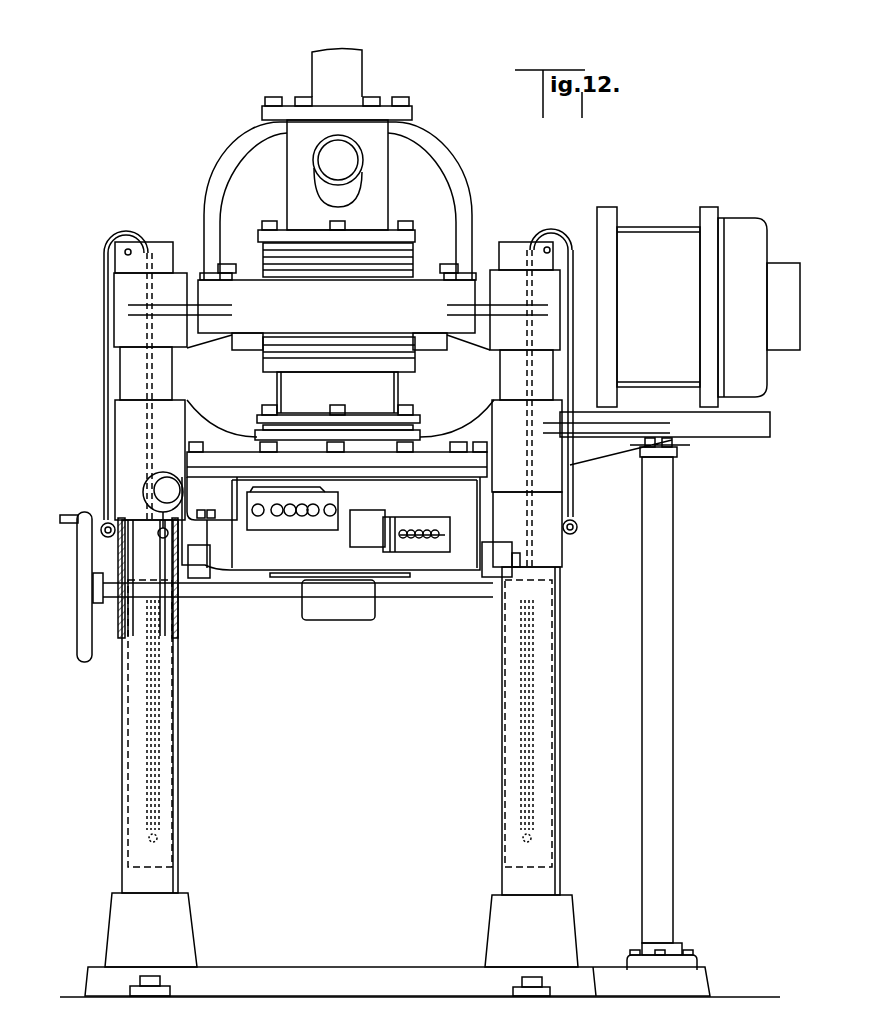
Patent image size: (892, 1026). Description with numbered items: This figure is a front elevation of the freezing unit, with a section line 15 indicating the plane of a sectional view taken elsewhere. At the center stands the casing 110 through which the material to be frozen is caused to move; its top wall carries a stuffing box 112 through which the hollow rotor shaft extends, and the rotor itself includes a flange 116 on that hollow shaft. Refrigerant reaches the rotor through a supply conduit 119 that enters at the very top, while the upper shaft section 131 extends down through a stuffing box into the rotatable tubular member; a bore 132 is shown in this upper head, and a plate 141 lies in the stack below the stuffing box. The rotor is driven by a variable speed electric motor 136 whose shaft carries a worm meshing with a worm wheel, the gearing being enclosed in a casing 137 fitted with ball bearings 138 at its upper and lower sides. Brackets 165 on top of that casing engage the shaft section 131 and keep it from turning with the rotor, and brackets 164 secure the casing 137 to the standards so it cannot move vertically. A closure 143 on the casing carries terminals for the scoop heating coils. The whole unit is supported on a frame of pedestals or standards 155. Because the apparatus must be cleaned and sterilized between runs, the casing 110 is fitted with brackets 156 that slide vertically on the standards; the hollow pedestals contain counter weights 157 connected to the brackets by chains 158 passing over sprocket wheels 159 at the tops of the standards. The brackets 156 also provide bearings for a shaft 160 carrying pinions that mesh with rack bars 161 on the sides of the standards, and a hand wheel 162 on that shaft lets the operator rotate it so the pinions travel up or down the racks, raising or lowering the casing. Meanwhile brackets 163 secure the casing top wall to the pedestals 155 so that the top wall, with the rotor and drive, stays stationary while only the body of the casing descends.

The section line 15 is at (313, 32).
The casing 110 is at (232, 560).
The stuffing box 112 is at (370, 418).
The flange 116 is at (152, 477).
The supply conduit 119 is at (362, 65).
The upper shaft section 131 is at (376, 192).
The bore 132 is at (313, 166).
The variable speed electric motor 136 is at (645, 233).
The casing 137 is at (247, 310).
The ball bearings 138 is at (375, 268).
The plate 141 is at (428, 437).
The closure 143 is at (332, 497).
The pedestals or standards 155 is at (175, 792).
The brackets 156 is at (198, 563).
The counter weights 157 is at (132, 627).
The chains 158 is at (103, 378).
The sprocket wheels 159 is at (125, 236).
The shaft 160 is at (423, 583).
The rack bars 161 is at (153, 733).
The hand wheel 162 is at (80, 613).
The brackets 163 is at (196, 421).
The brackets 164 is at (178, 276).
The brackets 165 is at (233, 145).